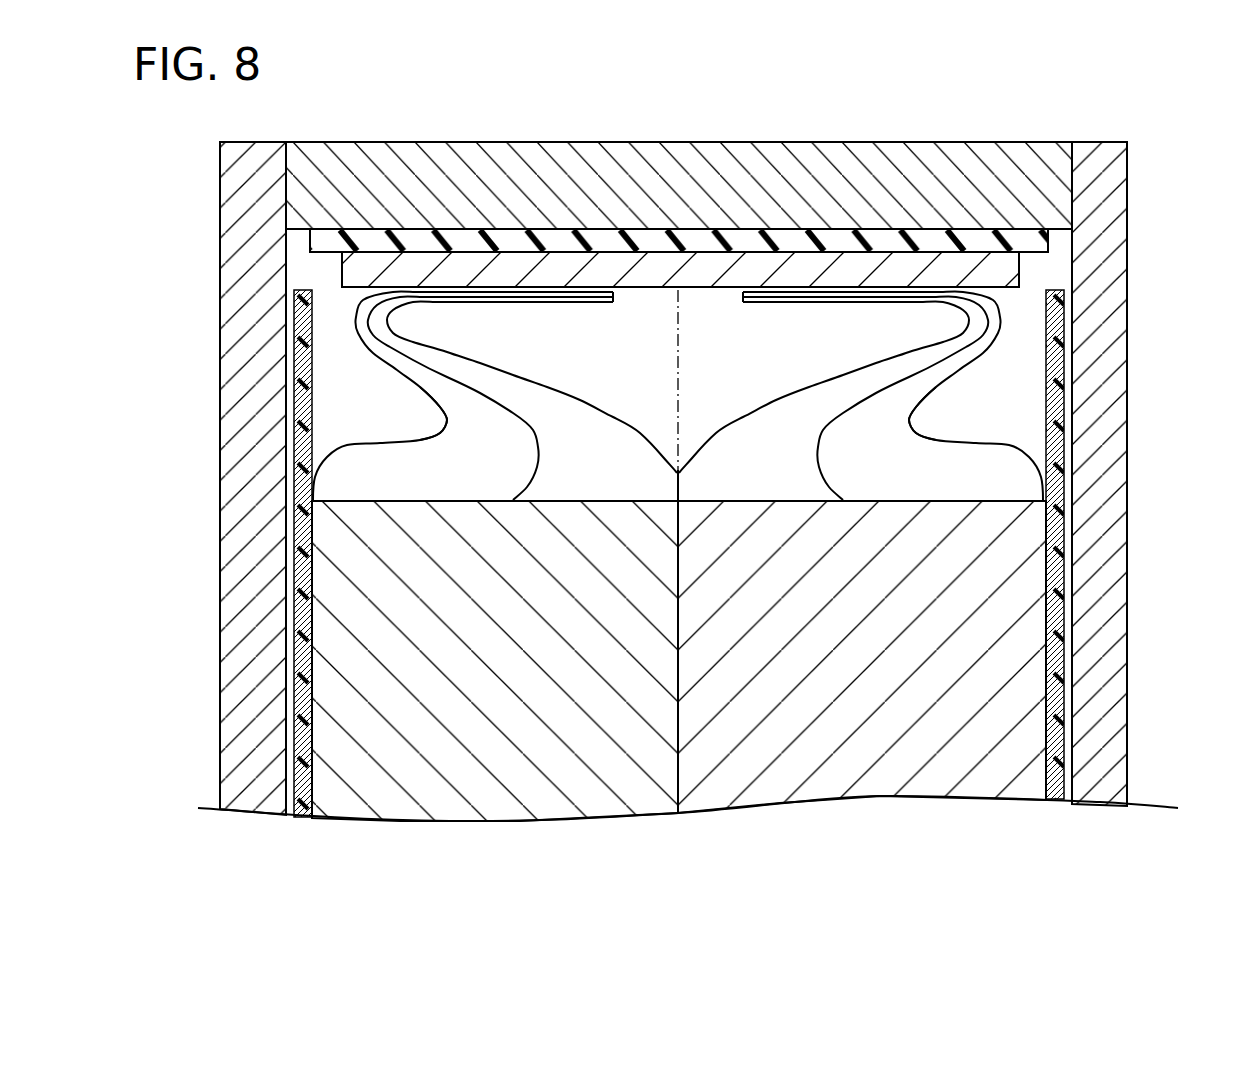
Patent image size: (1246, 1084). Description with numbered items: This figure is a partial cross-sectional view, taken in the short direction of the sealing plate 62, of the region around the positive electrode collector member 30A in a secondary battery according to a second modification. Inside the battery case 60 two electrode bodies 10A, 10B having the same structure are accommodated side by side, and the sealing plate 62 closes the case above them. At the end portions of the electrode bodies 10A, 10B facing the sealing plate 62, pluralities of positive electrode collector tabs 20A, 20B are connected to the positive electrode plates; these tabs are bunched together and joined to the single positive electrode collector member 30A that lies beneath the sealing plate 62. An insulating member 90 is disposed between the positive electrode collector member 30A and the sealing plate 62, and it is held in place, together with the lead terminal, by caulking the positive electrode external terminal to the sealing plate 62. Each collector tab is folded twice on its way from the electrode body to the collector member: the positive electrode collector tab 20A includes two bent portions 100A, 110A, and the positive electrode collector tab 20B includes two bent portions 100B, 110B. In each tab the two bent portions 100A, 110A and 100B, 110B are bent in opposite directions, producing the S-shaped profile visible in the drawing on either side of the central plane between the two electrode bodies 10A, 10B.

The electrode body 10A is at (1040, 690).
The electrode body 10B is at (330, 680).
The positive electrode collector tab 20A is at (780, 396).
The positive electrode collector tab 20B is at (576, 396).
The positive electrode collector member 30A is at (966, 275).
The battery case 60 is at (236, 428).
The sealing plate 62 is at (525, 152).
The insulating member 90 is at (622, 246).
The bent portion 100A is at (927, 316).
The bent portion 100B is at (429, 316).
The bent portion 110A is at (927, 421).
The bent portion 110B is at (429, 421).